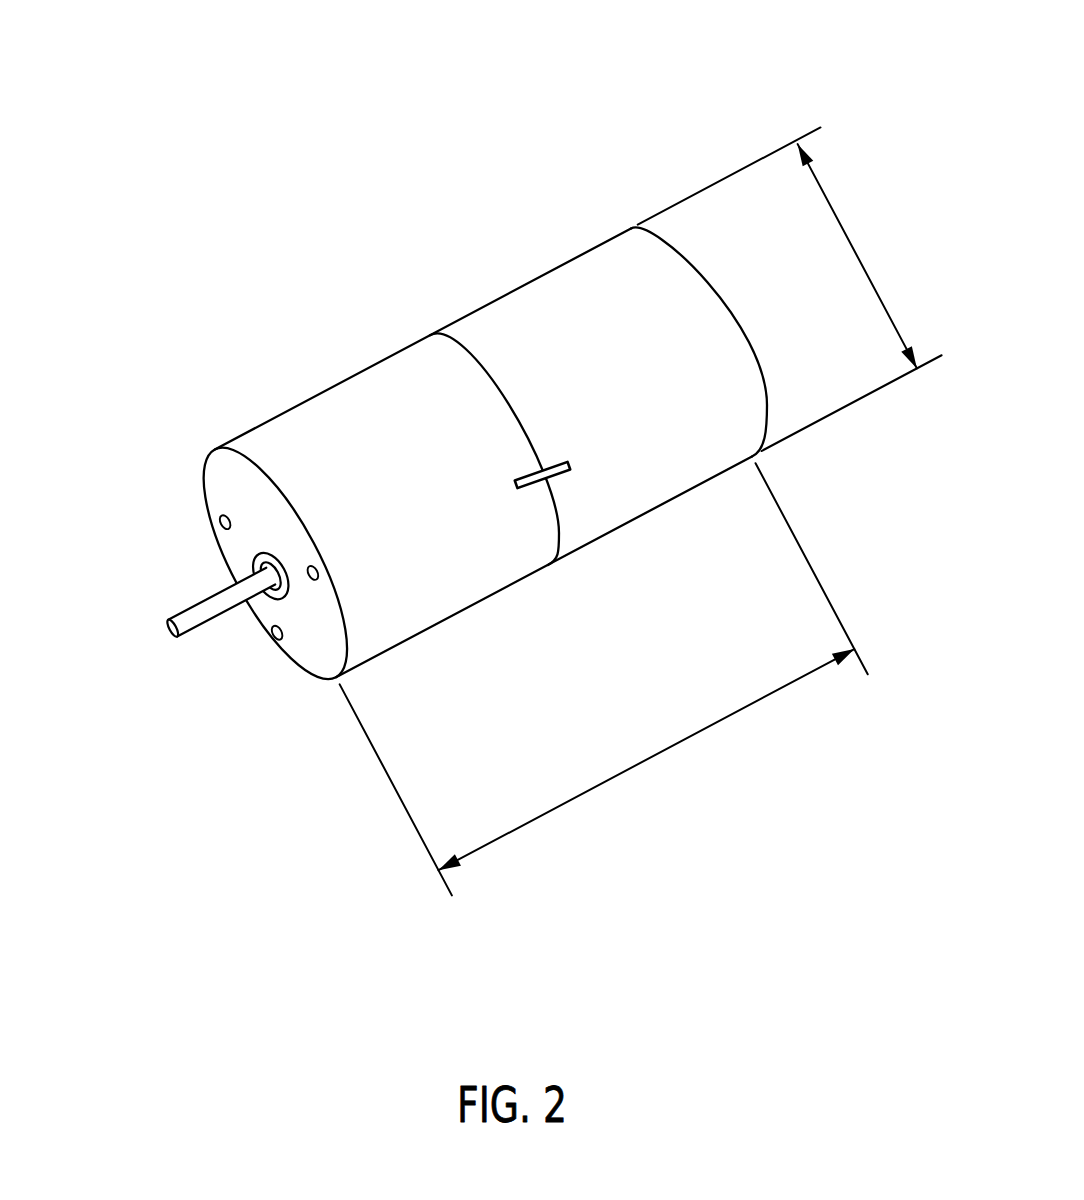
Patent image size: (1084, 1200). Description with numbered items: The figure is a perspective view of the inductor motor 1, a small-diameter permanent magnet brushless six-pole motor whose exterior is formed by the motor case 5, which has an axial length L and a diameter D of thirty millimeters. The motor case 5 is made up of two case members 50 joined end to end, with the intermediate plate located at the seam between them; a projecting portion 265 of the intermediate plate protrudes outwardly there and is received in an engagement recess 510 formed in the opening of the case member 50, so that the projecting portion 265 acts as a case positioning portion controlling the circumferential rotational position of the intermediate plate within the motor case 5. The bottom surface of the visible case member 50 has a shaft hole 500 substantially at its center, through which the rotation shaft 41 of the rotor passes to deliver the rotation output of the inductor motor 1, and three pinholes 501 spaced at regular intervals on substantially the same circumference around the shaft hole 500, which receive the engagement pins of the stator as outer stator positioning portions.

The inductor motor 1 is at (627, 178).
The motor case 5 is at (711, 492).
The case member 50 is at (382, 430).
The projecting portion 265 is at (545, 462).
The engagement recess 510 is at (553, 483).
The pinhole 501 is at (218, 525).
The shaft hole 500 is at (272, 600).
The rotation shaft 41 is at (198, 620).